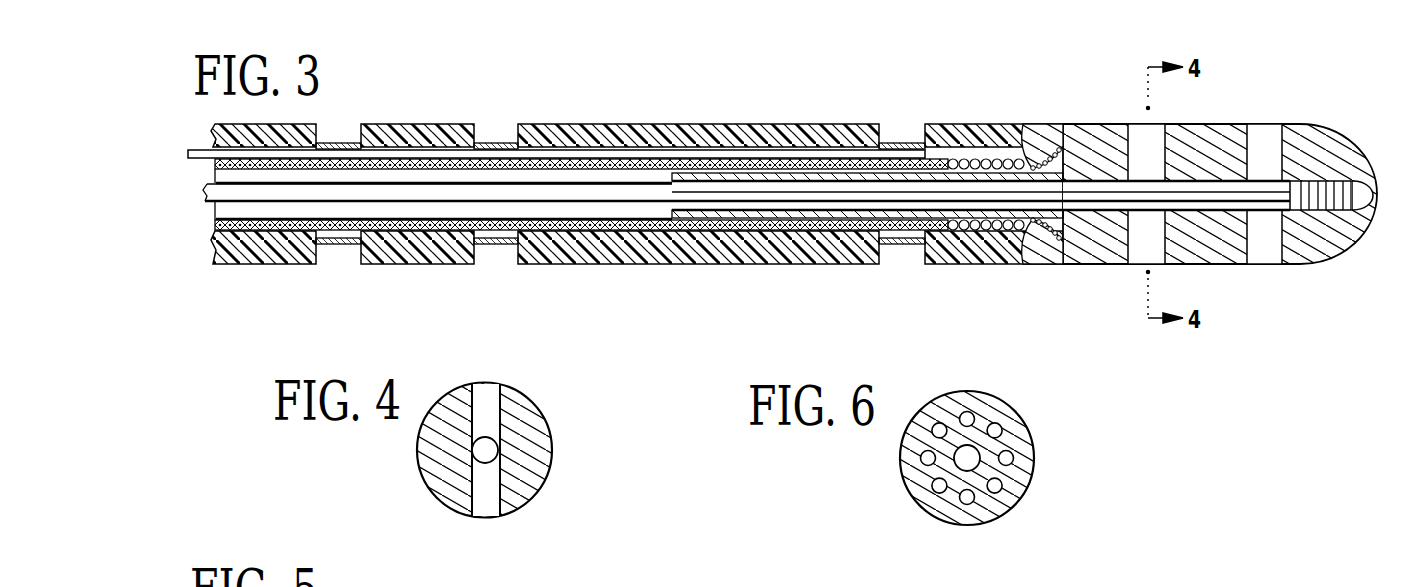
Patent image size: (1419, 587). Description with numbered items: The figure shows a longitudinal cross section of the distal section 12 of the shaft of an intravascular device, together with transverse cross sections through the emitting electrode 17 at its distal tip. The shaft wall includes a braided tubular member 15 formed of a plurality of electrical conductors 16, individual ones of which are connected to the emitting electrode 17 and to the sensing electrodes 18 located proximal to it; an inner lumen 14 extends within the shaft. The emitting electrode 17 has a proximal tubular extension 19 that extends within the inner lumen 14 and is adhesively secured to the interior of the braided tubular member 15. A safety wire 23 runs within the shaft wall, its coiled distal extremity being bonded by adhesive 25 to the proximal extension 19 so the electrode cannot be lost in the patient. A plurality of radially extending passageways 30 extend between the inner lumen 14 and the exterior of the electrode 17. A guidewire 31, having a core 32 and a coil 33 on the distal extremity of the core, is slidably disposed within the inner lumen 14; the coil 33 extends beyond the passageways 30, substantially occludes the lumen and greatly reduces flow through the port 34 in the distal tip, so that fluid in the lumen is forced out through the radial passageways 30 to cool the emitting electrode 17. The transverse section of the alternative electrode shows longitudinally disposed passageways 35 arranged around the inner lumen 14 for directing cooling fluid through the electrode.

In FIG. 3, the distal section 12 is at (823, 264).
In FIG. 3, the inner lumen 14 is at (588, 215).
In FIG. 4, the inner lumen 14 is at (480, 452).
In FIG. 6, the inner lumen 14 is at (1033, 477).
In FIG. 3, the braided tubular member 15 is at (383, 232).
In FIG. 3, the electrical conductors 16 is at (682, 223).
In FIG. 3, the emitting electrode 17 is at (1317, 153).
In FIG. 4, the emitting electrode 17 is at (527, 443).
In FIG. 6, the emitting electrode 17 is at (933, 507).
In FIG. 3, the sensing electrodes 18 is at (338, 142).
In FIG. 3, the proximal tubular extension 19 is at (768, 172).
In FIG. 3, the safety wire 23 is at (638, 152).
In FIG. 3, the adhesive 25 is at (975, 243).
In FIG. 3, the radially extending passageways 30 is at (1139, 128).
In FIG. 4, the radially extending passageways 30 is at (487, 397).
In FIG. 3, the guidewire 31 is at (1228, 192).
In FIG. 3, the core 32 is at (207, 195).
In FIG. 3, the coil 33 is at (1367, 207).
In FIG. 3, the port 34 is at (1365, 182).
In FIG. 6, the longitudinally disposed passageways 35 is at (997, 430).